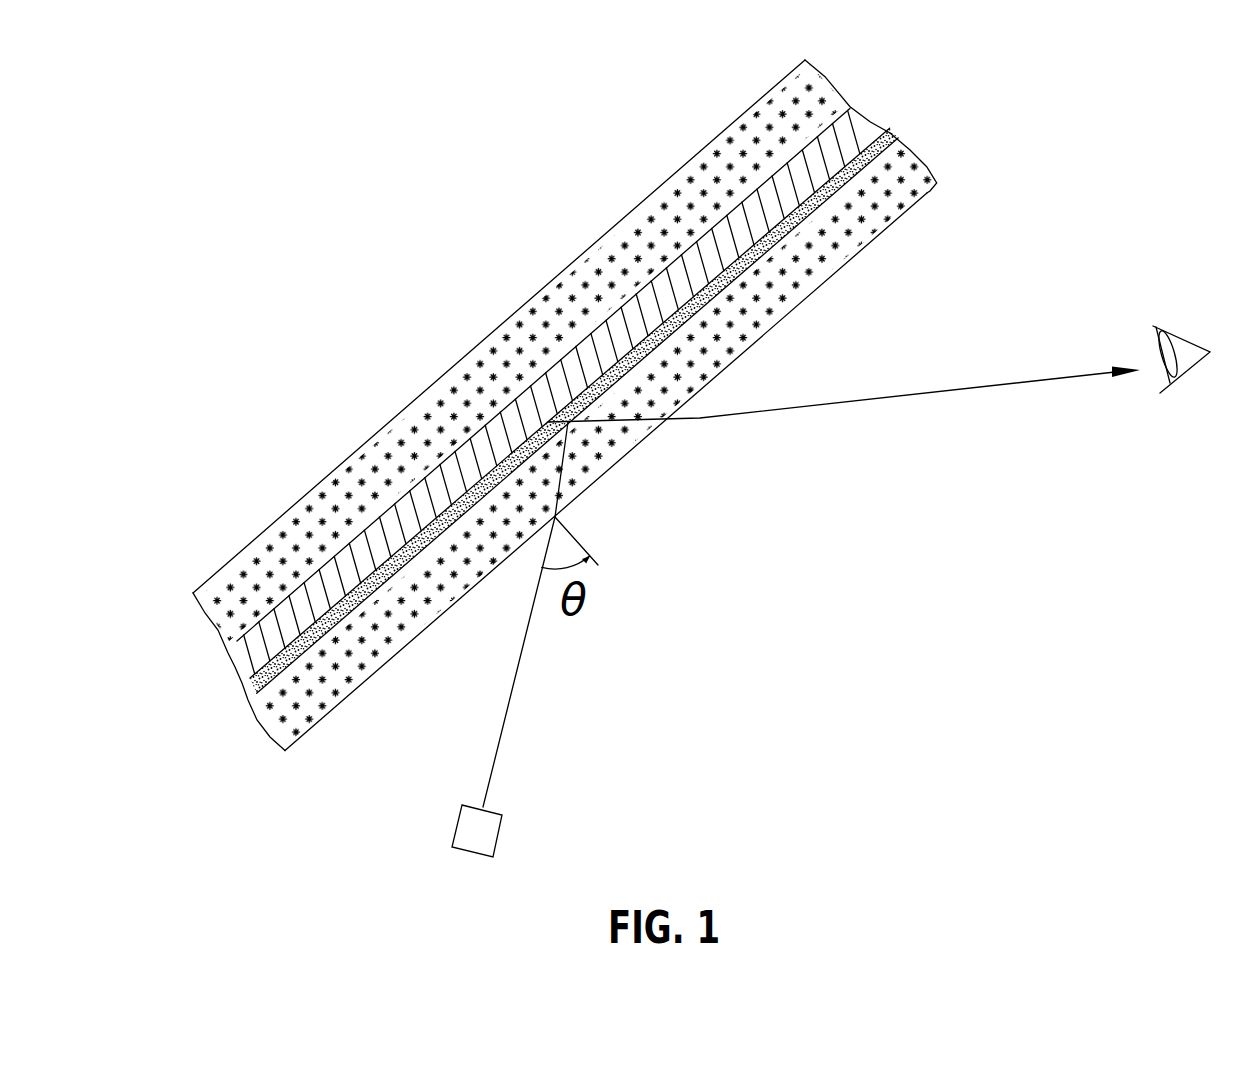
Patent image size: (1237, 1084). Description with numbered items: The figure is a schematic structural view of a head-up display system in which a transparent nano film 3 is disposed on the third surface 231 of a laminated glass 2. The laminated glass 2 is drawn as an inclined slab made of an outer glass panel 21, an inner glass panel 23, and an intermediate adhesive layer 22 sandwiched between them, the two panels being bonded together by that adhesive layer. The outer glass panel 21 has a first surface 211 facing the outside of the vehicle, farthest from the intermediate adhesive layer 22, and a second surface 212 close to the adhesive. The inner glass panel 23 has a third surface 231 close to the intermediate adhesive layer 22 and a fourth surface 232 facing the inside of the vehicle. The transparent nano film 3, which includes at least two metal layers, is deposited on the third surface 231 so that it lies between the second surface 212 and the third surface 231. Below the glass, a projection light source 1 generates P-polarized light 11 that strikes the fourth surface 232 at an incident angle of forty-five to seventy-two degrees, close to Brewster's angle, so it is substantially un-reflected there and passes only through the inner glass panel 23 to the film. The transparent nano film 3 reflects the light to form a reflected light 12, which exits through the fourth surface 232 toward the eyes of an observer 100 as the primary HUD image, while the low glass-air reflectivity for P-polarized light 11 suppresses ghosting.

The projection light source 1 is at (493, 832).
The P-polarized light 11 is at (520, 673).
The reflected light 12 is at (855, 403).
The observer 100 is at (1185, 365).
The laminated glass 2 is at (898, 119).
The outer glass panel 21 is at (521, 350).
The first surface 211 is at (293, 507).
The second surface 212 is at (530, 392).
The intermediate adhesive layer 22 is at (623, 307).
The inner glass panel 23 is at (585, 481).
The third surface 231 is at (753, 270).
The fourth surface 232 is at (353, 698).
The transparent nano film 3 is at (833, 190).